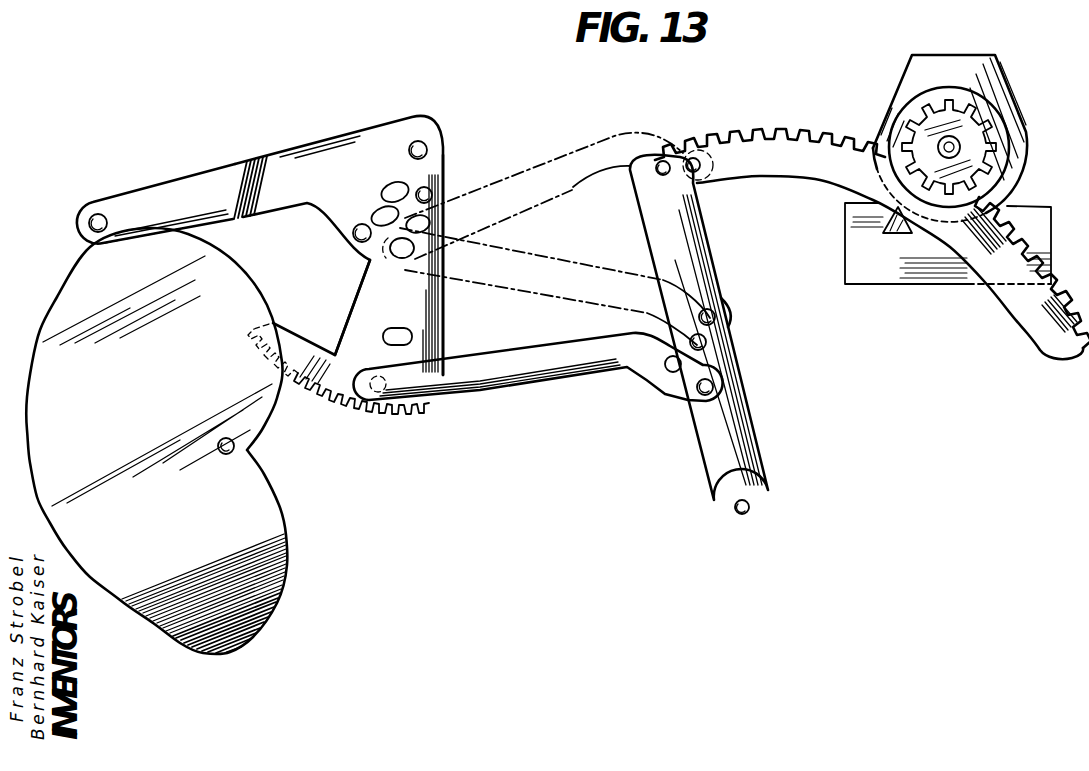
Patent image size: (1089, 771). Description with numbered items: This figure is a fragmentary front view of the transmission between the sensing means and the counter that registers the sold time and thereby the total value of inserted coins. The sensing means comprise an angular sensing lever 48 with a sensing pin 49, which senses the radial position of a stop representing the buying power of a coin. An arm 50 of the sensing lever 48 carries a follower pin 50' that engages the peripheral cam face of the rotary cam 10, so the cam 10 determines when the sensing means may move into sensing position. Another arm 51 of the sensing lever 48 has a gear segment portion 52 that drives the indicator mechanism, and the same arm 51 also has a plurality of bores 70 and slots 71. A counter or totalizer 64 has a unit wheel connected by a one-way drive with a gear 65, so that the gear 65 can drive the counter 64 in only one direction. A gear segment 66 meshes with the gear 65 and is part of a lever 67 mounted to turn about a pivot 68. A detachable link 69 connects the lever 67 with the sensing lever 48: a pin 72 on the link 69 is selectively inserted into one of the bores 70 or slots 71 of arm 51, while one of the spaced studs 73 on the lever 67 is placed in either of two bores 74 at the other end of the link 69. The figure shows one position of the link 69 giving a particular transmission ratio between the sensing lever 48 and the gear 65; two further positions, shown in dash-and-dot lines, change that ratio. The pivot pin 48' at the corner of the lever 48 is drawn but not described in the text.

The rotary cam 10 is at (277, 546).
The angular sensing lever 48 is at (338, 242).
The pivot pin of plate 48' is at (434, 122).
The sensing pin 49 is at (356, 241).
The arm of sensing lever 50 is at (156, 193).
The follower pin 50' is at (110, 195).
The arm of sensing lever 51 is at (441, 312).
The gear segment portion 52 is at (303, 350).
The counter or totalizer 64 is at (996, 91).
The gear 65 is at (981, 144).
The gear segment 66 is at (1021, 303).
The lever 67 is at (705, 258).
The pivot 68 is at (752, 504).
The detachable link 69 is at (567, 176).
The bores 70 is at (432, 195).
The slots 71 is at (376, 211).
The pin 72 is at (386, 408).
The spaced studs 73 is at (699, 185).
The bores 74 is at (672, 376).